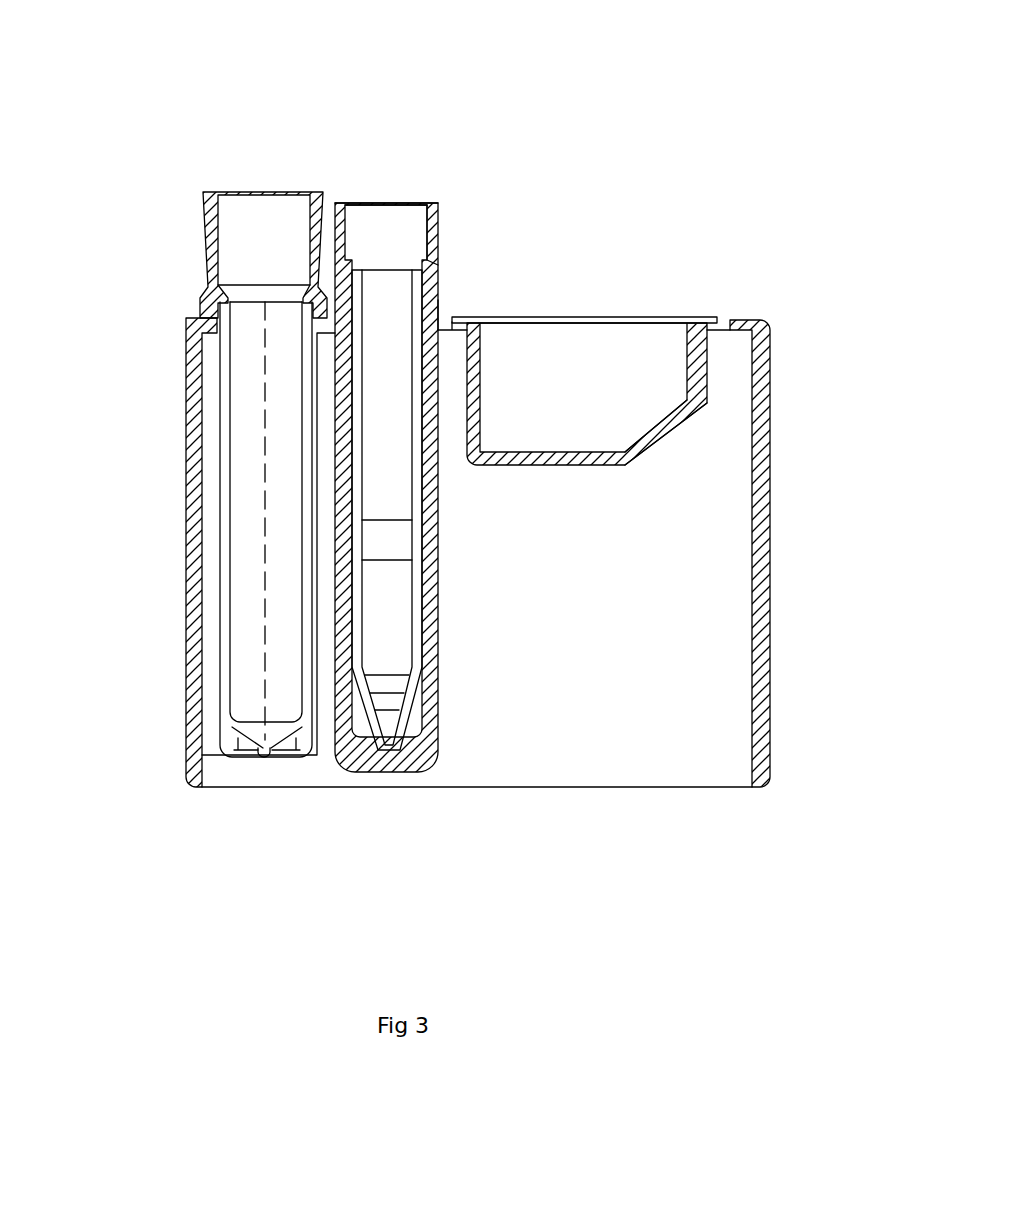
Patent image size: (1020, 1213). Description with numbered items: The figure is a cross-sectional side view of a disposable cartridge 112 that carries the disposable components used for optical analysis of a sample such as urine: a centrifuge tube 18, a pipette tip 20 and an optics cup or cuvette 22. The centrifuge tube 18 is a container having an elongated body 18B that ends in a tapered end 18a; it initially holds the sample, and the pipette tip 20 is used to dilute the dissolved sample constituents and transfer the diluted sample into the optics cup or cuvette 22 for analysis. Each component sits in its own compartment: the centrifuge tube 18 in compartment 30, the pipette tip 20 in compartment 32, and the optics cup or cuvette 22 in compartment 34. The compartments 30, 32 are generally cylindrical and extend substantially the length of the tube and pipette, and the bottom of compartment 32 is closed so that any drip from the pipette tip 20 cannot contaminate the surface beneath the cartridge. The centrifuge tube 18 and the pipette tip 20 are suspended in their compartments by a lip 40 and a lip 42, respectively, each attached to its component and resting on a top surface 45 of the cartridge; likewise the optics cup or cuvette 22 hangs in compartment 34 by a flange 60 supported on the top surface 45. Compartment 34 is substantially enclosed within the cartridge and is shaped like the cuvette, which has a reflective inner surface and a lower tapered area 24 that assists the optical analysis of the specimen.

The sample processing assembly 112 is at (647, 185).
The centrifuge tube 18 is at (247, 192).
The elongated body 18B is at (265, 528).
The tapered end 18a is at (260, 745).
The lip 40 is at (320, 316).
The top surface 45 is at (345, 260).
The pipette tip 20 is at (437, 203).
The lip 42 is at (438, 265).
The compartment 32 is at (438, 302).
The optics cup or cuvette 22 is at (622, 317).
The flange 60 is at (700, 317).
The compartment 34 is at (760, 317).
The lower tapered area 24 is at (660, 440).
The compartment 30 is at (187, 320).